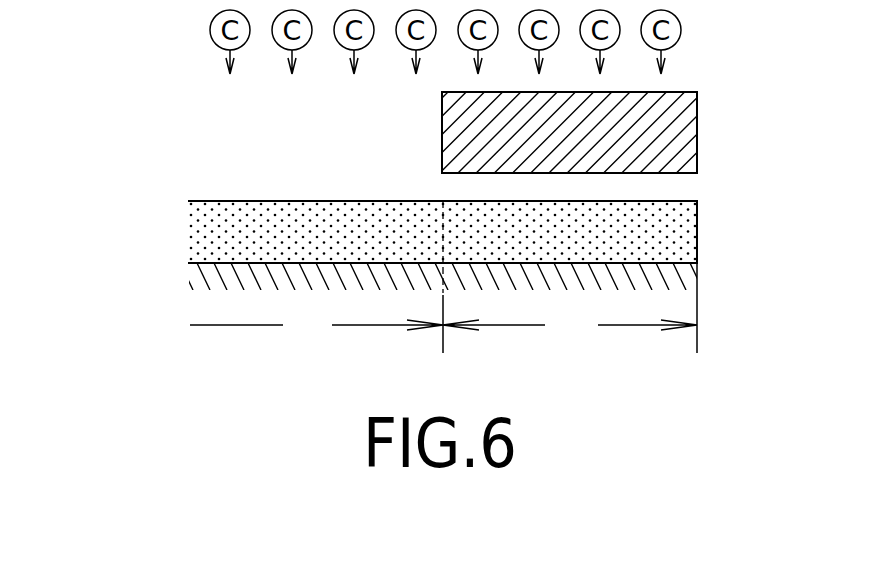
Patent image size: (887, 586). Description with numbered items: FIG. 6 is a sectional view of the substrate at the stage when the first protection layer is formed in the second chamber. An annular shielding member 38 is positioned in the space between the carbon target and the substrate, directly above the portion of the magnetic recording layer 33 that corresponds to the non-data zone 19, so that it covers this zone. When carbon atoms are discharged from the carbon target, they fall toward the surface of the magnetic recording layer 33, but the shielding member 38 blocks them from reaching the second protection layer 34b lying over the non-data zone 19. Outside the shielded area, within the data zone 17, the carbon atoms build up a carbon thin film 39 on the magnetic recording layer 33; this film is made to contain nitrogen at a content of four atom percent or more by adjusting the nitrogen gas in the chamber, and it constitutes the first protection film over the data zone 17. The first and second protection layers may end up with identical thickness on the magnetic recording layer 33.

The shielding member 38 is at (442, 128).
The carbon thin film 39 is at (212, 201).
The second protection layer 34b is at (675, 201).
The magnetic recording layer 33 is at (210, 263).
The data zone 17 is at (316, 327).
The non-data zone 19 is at (570, 327).